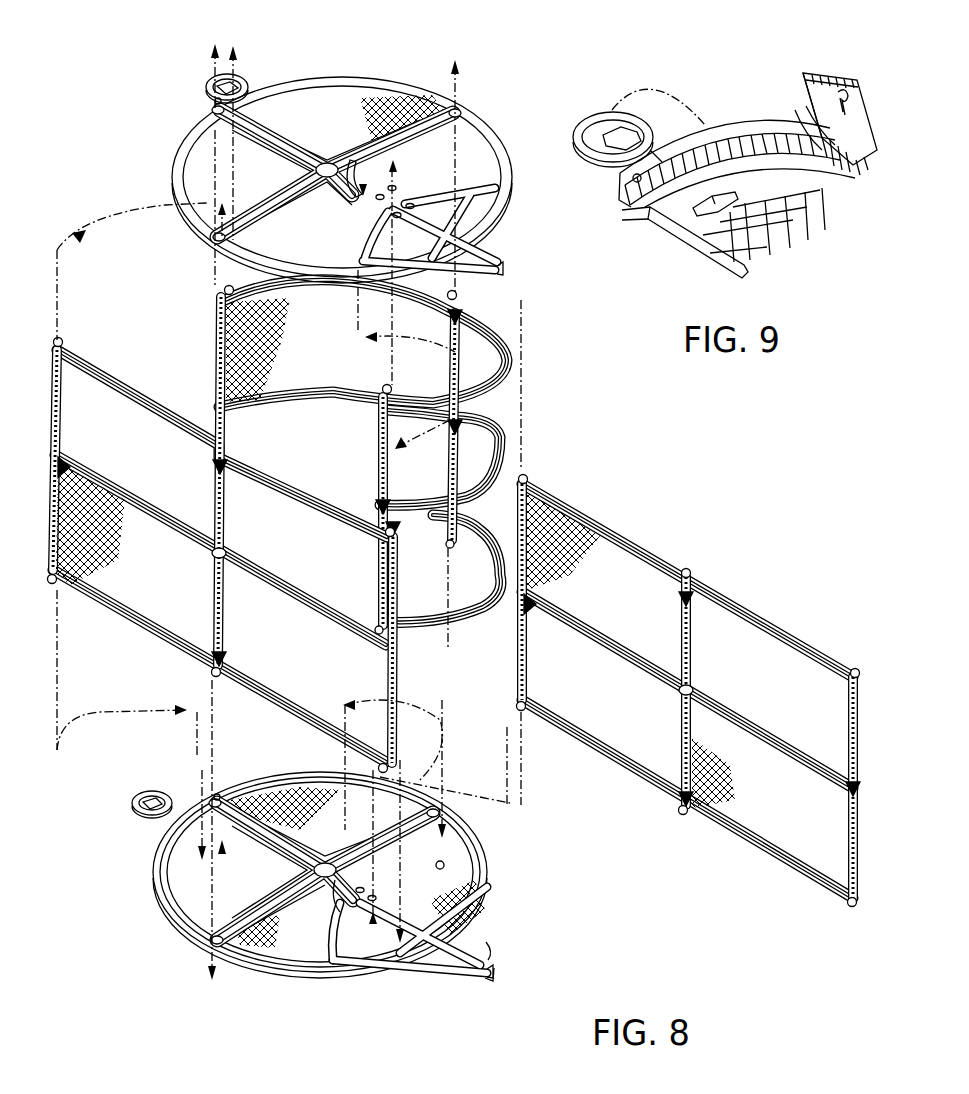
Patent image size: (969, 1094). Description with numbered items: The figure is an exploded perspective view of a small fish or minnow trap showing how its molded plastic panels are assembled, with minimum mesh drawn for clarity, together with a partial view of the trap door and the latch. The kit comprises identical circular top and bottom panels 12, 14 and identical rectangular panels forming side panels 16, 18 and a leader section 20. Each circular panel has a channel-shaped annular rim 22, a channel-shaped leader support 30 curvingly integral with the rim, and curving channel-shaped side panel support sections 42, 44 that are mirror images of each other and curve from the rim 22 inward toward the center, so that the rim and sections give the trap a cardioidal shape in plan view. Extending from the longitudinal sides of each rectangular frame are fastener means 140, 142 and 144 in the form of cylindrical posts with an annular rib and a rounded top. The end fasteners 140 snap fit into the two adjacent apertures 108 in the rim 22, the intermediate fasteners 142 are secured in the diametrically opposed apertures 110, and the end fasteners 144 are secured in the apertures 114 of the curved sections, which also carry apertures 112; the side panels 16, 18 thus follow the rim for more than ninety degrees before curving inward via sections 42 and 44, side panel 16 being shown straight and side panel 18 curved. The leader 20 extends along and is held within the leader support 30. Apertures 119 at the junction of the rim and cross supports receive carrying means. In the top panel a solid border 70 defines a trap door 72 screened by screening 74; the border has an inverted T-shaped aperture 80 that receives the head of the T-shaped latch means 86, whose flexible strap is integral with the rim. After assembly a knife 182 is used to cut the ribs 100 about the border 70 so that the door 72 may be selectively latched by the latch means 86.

In FIG. 8, the top panel 12 is at (280, 66).
In FIG. 8, the bottom panel 14 is at (280, 964).
In FIG. 8, the side panel 16 is at (130, 378).
In FIG. 8, the side panel 18 is at (212, 388).
In FIG. 8, the leader section 20 is at (644, 540).
In FIG. 8, the annular rim 22 is at (384, 83).
In FIG. 9, the annular rim 22 is at (713, 140).
In FIG. 8, the leader support 30 is at (458, 962).
In FIG. 8, the side panel support section 42 is at (224, 288).
In FIG. 8, the side panel support section 44 is at (457, 177).
In FIG. 8, the border 70 is at (310, 100).
In FIG. 9, the border 70 is at (682, 232).
In FIG. 9, the trap door 72 is at (805, 185).
In FIG. 9, the screening 74 is at (790, 245).
In FIG. 9, the T-shaped aperture 80 is at (736, 192).
In FIG. 8, the latch means 86 is at (233, 75).
In FIG. 9, the latch means 86 is at (613, 130).
In FIG. 9, the ribs 100 is at (808, 108).
In FIG. 8, the apertures 108 is at (216, 104).
In FIG. 9, the apertures 108 is at (634, 182).
In FIG. 8, the apertures 110 is at (460, 112).
In FIG. 8, the apertures 112 is at (376, 212).
In FIG. 8, the apertures 114 is at (358, 185).
In FIG. 8, the apertures 119 is at (450, 106).
In FIG. 8, the fastener means 140 is at (62, 340).
In FIG. 8, the fastener means 142 is at (458, 297).
In FIG. 8, the fastener means 144 is at (383, 388).
In FIG. 9, the knife 182 is at (852, 76).